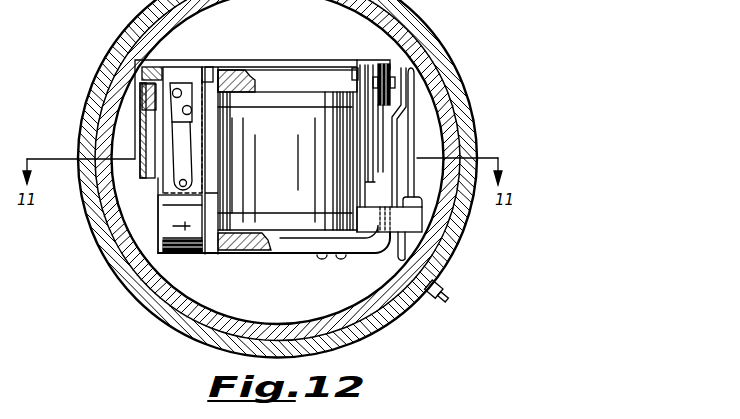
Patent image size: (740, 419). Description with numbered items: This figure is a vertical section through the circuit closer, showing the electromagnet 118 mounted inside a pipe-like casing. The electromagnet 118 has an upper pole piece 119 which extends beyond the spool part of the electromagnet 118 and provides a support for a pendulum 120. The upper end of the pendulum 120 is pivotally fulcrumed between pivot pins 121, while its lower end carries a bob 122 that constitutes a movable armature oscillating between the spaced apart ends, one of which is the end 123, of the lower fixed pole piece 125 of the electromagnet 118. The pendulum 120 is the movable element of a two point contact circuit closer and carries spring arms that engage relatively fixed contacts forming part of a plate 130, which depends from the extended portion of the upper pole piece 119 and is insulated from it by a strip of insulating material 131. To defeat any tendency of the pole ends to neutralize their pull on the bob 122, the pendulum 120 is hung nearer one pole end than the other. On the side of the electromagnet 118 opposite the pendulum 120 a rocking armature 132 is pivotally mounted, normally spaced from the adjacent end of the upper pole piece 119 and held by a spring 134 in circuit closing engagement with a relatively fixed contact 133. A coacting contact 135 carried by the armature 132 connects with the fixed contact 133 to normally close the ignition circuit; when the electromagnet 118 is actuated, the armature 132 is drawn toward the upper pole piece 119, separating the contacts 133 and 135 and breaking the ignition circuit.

The electromagnet 118 is at (288, 222).
The upper pole piece 119 is at (283, 80).
The pendulum 120 is at (170, 185).
The pivot pins 121 is at (212, 70).
The bob 122 is at (127, 278).
The end of lower fixed pole piece 123 is at (160, 232).
The lower fixed pole piece 125 is at (307, 240).
The plate 130 is at (143, 73).
The strip of insulating material 131 is at (142, 93).
The rocking armature 132 is at (370, 117).
The fixed contact 133 is at (390, 60).
The spring 134 is at (380, 162).
The coacting contact 135 is at (414, 66).